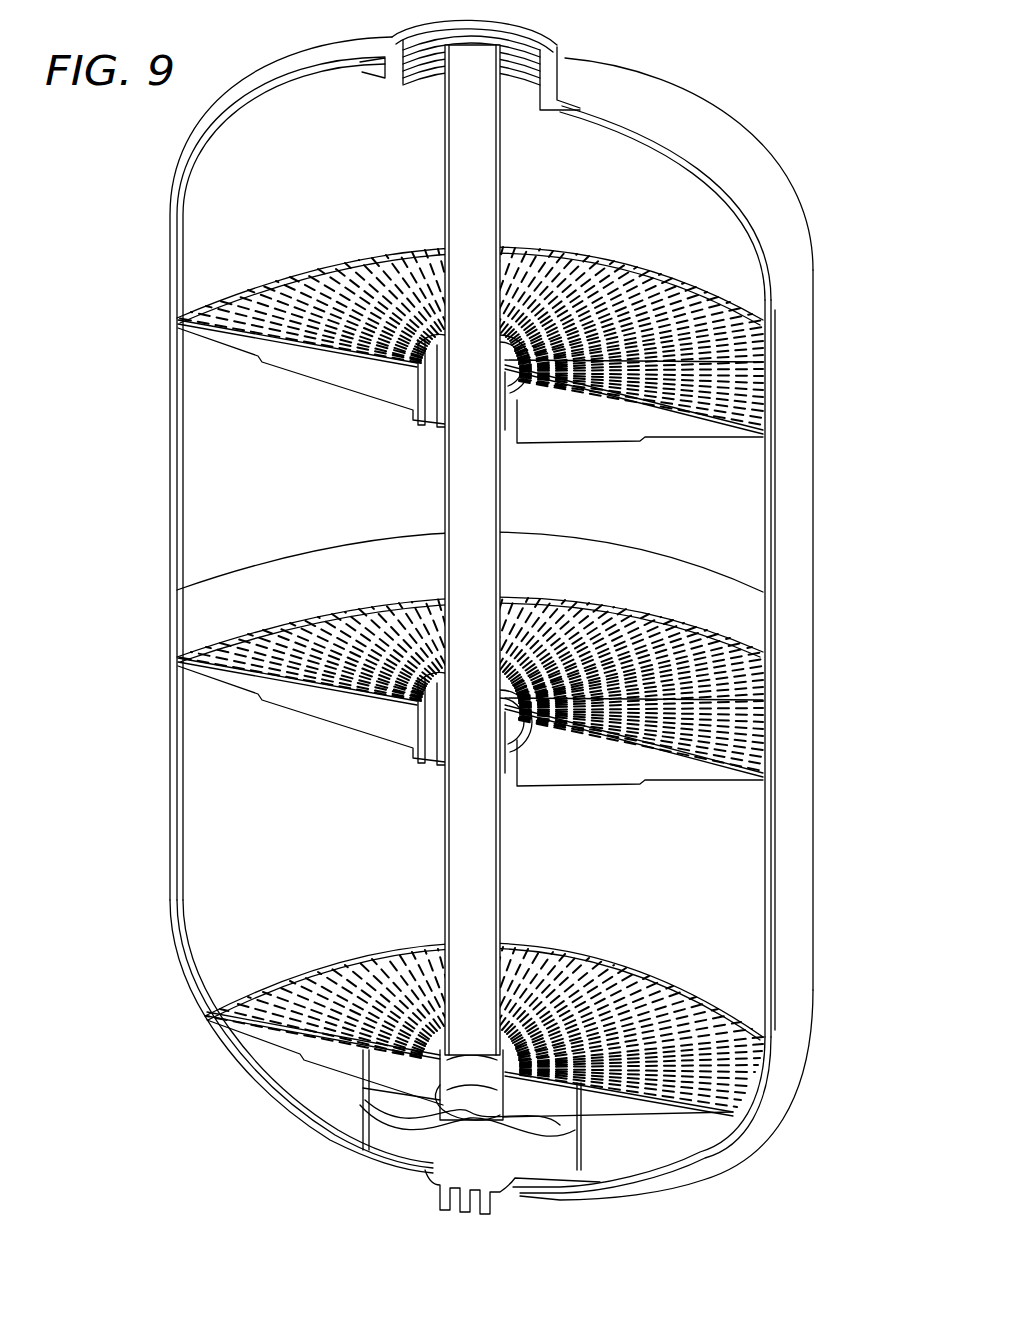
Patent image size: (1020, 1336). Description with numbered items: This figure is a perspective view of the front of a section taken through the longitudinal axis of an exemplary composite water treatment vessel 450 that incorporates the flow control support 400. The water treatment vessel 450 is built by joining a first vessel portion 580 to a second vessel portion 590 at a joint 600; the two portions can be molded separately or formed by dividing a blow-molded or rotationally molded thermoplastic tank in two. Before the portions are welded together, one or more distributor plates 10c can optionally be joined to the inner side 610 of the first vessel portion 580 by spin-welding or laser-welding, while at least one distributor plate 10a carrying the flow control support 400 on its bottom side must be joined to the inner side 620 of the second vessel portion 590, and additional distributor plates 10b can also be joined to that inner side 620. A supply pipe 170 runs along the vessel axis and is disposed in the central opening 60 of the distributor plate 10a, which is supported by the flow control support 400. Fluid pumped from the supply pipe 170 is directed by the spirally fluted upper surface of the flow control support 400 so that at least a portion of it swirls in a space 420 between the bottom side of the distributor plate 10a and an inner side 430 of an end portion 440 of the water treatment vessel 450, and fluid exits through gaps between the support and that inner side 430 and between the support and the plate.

The water treatment vessel 450 is at (116, 668).
The first vessel portion 580 is at (812, 532).
The second vessel portion 590 is at (768, 855).
The end portion 440 is at (697, 1153).
The inner side 430 is at (297, 1082).
The central opening 60 is at (470, 1088).
The flow control support 400 is at (562, 1177).
The space 420 is at (625, 1144).
The inner side 610 is at (245, 253).
The inner side 620 is at (284, 853).
The joint 600 is at (217, 570).
The distributor plate 10c is at (320, 290).
The distributor plate 10b is at (293, 636).
The distributor plate 10a is at (317, 985).
The supply pipe 170 is at (500, 866).